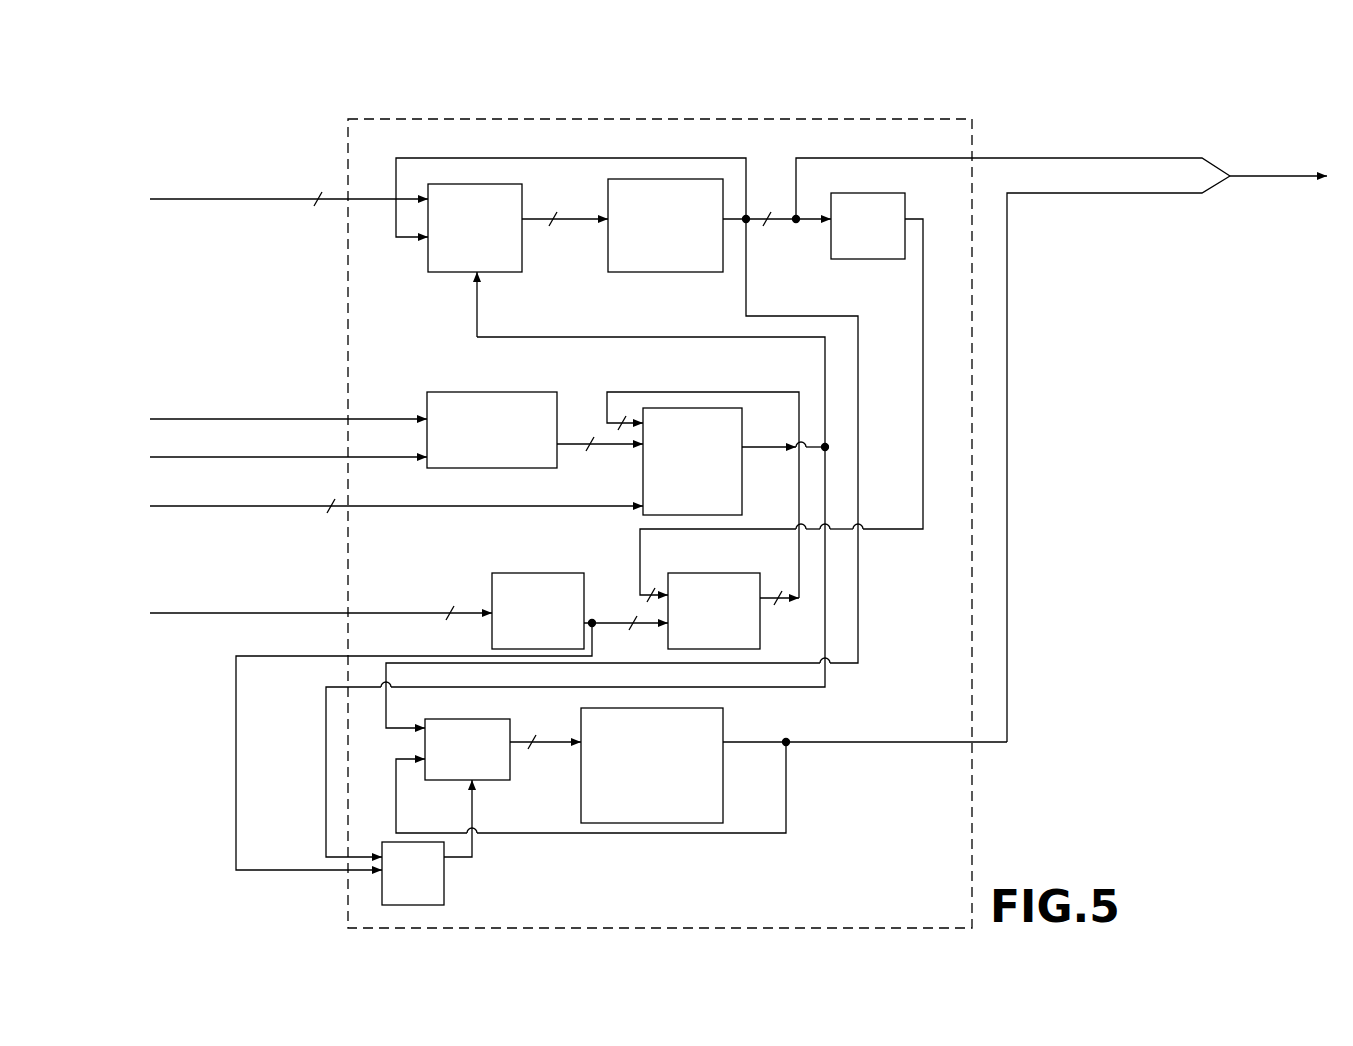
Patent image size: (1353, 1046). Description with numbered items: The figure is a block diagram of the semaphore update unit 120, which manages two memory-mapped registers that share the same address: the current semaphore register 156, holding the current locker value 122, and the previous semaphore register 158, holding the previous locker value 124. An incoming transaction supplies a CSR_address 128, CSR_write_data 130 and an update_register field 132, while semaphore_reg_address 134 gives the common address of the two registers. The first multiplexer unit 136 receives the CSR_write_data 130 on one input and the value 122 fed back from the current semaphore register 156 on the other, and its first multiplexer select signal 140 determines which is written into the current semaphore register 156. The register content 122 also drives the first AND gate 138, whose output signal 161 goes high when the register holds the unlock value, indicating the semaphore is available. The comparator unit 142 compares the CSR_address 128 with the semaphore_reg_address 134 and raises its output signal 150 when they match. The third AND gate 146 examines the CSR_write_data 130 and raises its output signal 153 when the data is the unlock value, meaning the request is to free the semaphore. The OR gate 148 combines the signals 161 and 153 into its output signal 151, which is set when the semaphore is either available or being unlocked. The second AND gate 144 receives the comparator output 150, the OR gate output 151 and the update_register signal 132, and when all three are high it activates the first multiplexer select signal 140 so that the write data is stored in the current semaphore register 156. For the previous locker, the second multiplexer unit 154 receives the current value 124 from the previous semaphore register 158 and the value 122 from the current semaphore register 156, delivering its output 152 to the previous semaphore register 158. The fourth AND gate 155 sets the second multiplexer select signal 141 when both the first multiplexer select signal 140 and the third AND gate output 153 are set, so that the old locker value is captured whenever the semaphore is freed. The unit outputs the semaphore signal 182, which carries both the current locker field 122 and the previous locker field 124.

The semaphore update unit 120 is at (333, 150).
The current locker 122 is at (516, 158).
The previous locker 124 is at (1066, 195).
The CSR_address 128 is at (290, 458).
The CSR_write_data 130 is at (325, 205).
The update_register 132 is at (302, 507).
The semaphore_reg_address 134 is at (374, 418).
The first multiplexer unit 136 is at (440, 274).
The first AND gate 138 is at (905, 203).
The first multiplexer select signal 140 is at (480, 310).
The second multiplexer select signal 141 is at (474, 857).
The comparator unit 142 is at (472, 392).
The second AND gate 144 is at (742, 446).
The third AND gate 146 is at (568, 573).
The OR gate 148 is at (710, 573).
The output signal of the comparator unit 150 is at (578, 442).
The output signal of the OR gate 151 is at (668, 392).
The output of the second multiplexer unit 152 is at (546, 743).
The output signal of the third AND gate 153 is at (603, 622).
The second multiplexer unit 154 is at (492, 720).
The fourth AND gate 155 is at (444, 888).
The current semaphore register 156 is at (668, 273).
The previous semaphore register 158 is at (724, 730).
The output signal of the first AND gate 161 is at (923, 343).
The semaphore signal 182 is at (1264, 176).